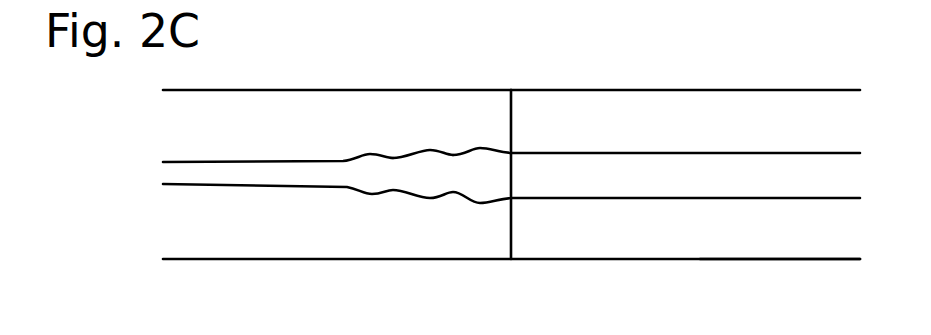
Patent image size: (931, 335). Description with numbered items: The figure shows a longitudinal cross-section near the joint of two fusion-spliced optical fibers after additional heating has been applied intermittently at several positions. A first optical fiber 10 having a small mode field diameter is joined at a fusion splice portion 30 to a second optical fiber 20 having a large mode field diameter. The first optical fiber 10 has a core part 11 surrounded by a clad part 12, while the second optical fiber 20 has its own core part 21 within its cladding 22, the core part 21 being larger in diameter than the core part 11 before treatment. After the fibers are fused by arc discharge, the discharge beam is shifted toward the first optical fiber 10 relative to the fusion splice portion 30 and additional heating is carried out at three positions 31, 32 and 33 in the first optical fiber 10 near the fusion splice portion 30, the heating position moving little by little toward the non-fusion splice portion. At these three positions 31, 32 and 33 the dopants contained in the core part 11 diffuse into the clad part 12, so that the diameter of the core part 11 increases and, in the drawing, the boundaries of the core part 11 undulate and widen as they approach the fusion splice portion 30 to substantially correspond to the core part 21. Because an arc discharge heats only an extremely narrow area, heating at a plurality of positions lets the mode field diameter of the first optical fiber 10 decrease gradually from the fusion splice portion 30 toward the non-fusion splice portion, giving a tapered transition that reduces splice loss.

The first optical fiber 10 is at (267, 106).
The core part 11 is at (278, 173).
The clad part 12 is at (447, 243).
The second optical fiber 20 is at (688, 115).
The core part 21 is at (669, 188).
The second bottom layer 22 is at (790, 237).
The fusion splice portion 30 is at (512, 88).
The position 31 is at (487, 141).
The position 32 is at (425, 144).
The position 33 is at (368, 148).